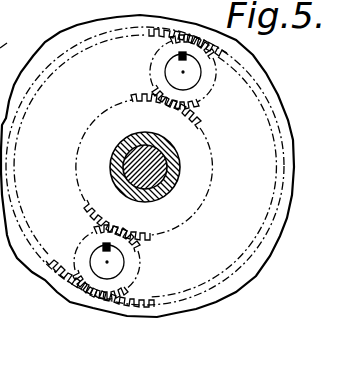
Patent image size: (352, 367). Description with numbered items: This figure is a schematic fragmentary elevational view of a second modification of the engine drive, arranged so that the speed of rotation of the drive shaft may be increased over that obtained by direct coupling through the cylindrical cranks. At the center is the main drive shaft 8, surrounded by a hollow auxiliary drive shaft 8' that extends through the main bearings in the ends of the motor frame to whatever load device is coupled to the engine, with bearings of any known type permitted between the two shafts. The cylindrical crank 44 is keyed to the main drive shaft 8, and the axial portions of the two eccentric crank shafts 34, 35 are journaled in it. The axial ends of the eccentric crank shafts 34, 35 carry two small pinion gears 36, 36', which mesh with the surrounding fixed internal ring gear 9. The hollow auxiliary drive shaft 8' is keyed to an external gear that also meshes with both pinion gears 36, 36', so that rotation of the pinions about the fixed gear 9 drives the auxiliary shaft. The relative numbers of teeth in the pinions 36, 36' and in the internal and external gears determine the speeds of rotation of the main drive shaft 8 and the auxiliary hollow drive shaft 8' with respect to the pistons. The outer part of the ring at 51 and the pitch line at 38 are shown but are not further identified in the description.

The fixed gear 9 is at (15, 208).
The casing 51 is at (16, 30).
The cylindrical crank 44 is at (258, 157).
The sun gear pitch circle 38 is at (204, 207).
The main drive shaft 8 is at (178, 166).
The hollow auxiliary drive shaft 8' is at (149, 167).
The pinion gear 36 is at (199, 82).
The eccentric crank shaft 34 is at (183, 72).
The pinion gear 36' is at (135, 262).
The eccentric crank shaft 35 is at (103, 258).